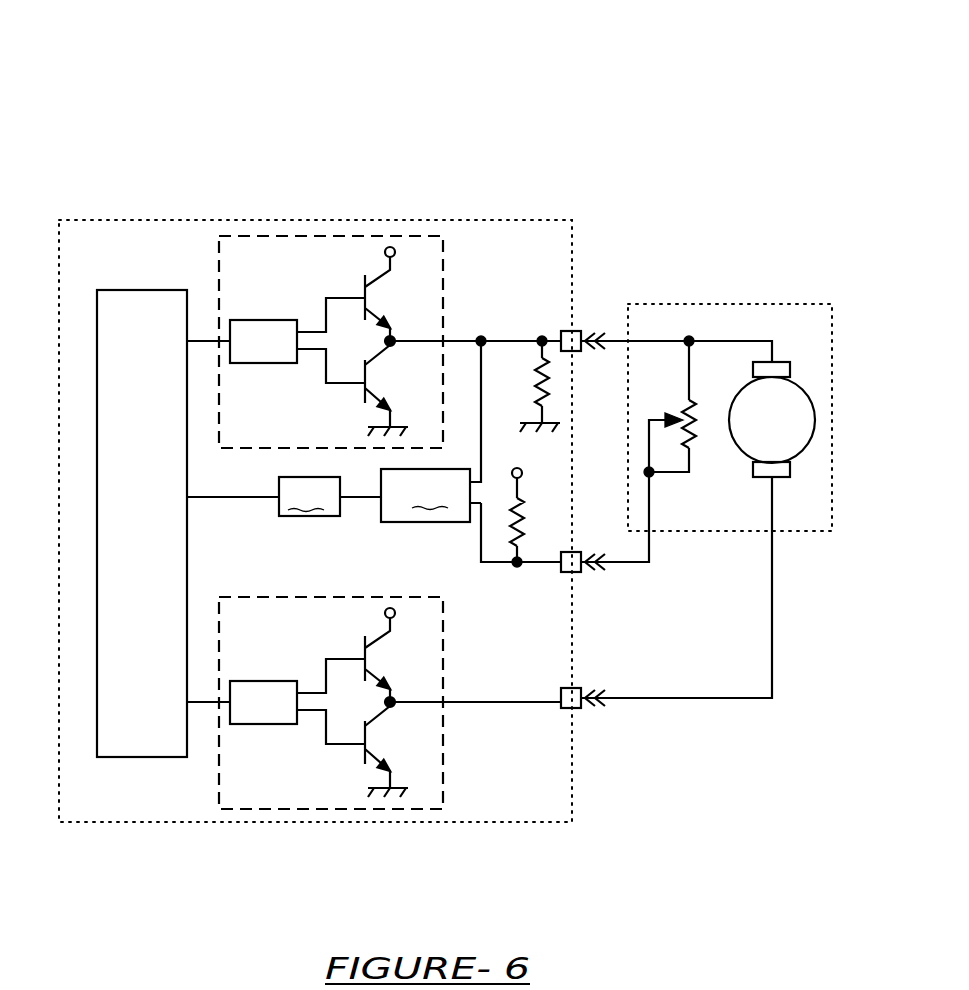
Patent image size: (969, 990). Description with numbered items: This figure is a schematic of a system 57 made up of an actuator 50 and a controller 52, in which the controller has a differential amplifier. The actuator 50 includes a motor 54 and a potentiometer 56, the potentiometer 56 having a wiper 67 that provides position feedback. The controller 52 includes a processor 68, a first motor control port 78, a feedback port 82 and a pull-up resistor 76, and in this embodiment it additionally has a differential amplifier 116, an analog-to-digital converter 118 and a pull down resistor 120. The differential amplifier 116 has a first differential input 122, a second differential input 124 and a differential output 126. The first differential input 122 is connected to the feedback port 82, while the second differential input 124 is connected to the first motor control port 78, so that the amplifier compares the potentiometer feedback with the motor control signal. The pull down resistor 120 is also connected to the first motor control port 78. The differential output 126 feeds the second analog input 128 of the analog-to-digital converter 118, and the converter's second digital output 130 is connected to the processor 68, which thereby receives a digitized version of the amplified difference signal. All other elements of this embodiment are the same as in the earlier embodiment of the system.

The system 57 is at (685, 153).
The controller 52 is at (572, 218).
The actuator 50 is at (832, 304).
The processor 68 is at (125, 315).
The first differential input 122 is at (482, 382).
The second differential input 124 is at (483, 537).
The pull down resistor 120 is at (545, 382).
The pull-up resistor 76 is at (520, 518).
The first motor control port 78 is at (581, 328).
The feedback port 82 is at (582, 575).
The second digital output 130 is at (268, 498).
The analog-to-digital converter 118 is at (309, 496).
The second analog input 128 is at (352, 498).
The differential output 126 is at (370, 498).
The differential amplifier 116 is at (425, 495).
The potentiometer 56 is at (691, 363).
The wiper 67 is at (665, 414).
The motor 54 is at (803, 422).